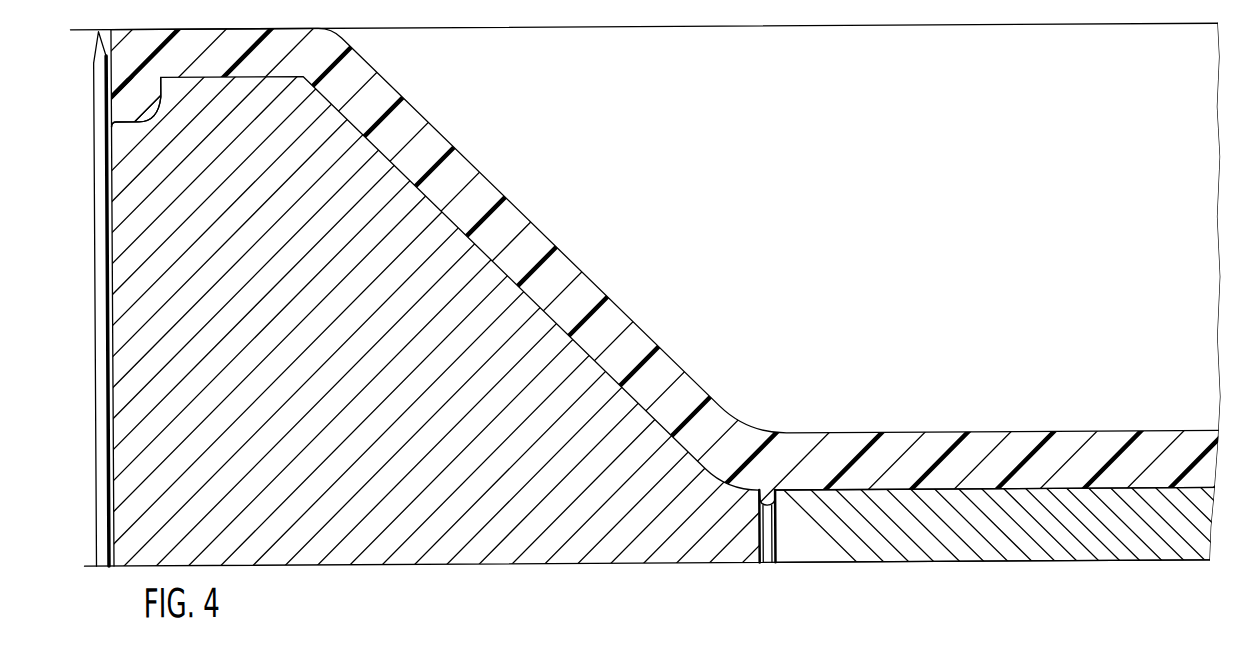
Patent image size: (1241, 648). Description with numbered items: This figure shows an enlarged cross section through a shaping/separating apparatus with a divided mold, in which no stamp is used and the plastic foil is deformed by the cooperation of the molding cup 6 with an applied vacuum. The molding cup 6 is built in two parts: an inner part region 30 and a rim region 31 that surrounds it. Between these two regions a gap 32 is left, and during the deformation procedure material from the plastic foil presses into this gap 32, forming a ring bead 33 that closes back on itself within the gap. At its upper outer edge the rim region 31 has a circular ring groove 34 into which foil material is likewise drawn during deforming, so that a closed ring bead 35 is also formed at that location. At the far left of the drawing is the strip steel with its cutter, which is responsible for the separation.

The molding cup 6 is at (538, 320).
The inner part region 30 is at (1072, 530).
The rim region 31 is at (617, 533).
The gap 32 is at (767, 549).
The ring bead 33 is at (765, 503).
The circular ring groove 34 is at (138, 120).
The closed ring bead 35 is at (138, 90).